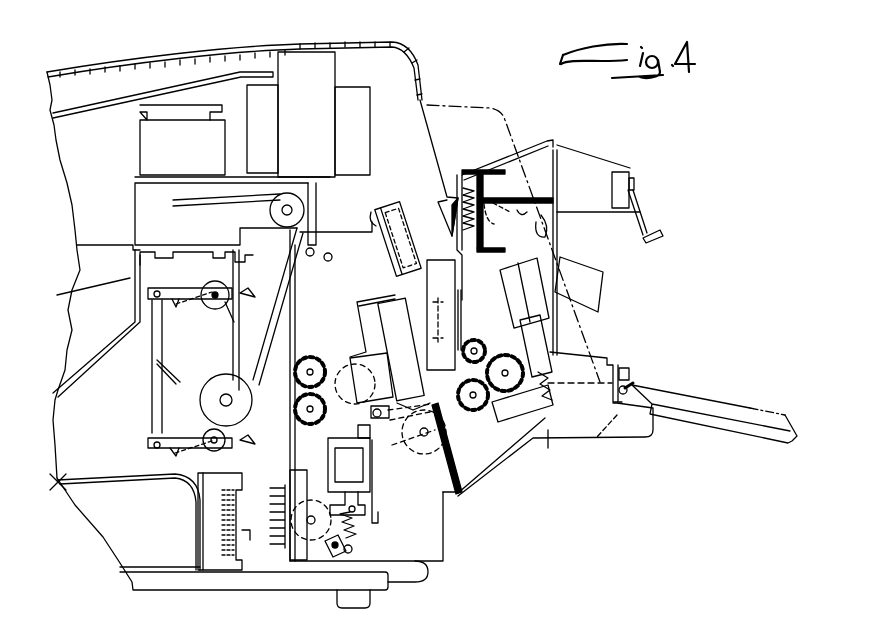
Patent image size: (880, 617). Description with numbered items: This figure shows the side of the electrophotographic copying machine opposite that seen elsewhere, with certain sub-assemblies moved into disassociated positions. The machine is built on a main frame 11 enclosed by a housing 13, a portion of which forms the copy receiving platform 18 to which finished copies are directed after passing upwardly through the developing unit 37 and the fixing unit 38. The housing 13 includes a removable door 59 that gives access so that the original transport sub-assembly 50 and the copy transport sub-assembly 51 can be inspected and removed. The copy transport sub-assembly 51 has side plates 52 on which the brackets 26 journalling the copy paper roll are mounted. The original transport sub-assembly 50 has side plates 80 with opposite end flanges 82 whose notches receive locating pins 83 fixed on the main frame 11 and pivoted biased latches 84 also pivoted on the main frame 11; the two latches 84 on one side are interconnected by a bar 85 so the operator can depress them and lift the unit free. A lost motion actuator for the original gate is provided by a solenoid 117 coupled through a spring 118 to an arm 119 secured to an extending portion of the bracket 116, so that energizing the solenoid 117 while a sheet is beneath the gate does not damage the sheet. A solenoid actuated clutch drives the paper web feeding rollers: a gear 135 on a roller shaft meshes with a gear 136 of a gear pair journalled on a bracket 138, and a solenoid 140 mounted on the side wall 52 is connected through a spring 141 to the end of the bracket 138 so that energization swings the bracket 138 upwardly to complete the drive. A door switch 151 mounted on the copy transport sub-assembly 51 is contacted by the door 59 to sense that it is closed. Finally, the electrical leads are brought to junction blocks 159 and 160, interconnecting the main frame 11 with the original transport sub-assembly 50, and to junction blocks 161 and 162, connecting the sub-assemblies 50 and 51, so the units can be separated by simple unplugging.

The main frame 11 is at (241, 340).
The housing 13 is at (203, 49).
The copy receiving platform 18 is at (108, 102).
The brackets 26 is at (603, 290).
The developing unit 37 is at (324, 204).
The fixing unit 38 is at (338, 81).
The original transport sub-assembly 50 is at (438, 547).
The copy transport sub-assembly 51 is at (570, 432).
The discharge opening 52 is at (550, 450).
The removable door 59 is at (509, 132).
The side plates 80 is at (436, 519).
The end flanges 82 is at (298, 306).
The locating pins 83 is at (247, 261).
The pivoted biased latches 84 is at (172, 288).
The bar 85 is at (152, 404).
The bracket 116 is at (333, 550).
The solenoid 117 is at (338, 456).
The spring 118 is at (353, 539).
The arm 119 is at (345, 553).
The gear 135 is at (474, 412).
The gear 136 is at (497, 359).
The bracket 138 is at (537, 413).
The solenoid 140 is at (551, 306).
The spring 141 is at (556, 358).
The door switch 151 is at (620, 174).
The junction block 159 is at (296, 472).
The junction block 160 is at (207, 520).
The junction block 161 is at (471, 185).
The junction block 162 is at (392, 212).